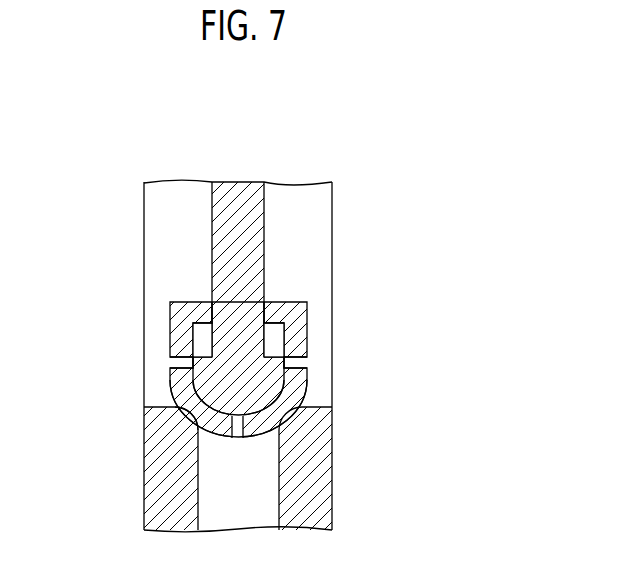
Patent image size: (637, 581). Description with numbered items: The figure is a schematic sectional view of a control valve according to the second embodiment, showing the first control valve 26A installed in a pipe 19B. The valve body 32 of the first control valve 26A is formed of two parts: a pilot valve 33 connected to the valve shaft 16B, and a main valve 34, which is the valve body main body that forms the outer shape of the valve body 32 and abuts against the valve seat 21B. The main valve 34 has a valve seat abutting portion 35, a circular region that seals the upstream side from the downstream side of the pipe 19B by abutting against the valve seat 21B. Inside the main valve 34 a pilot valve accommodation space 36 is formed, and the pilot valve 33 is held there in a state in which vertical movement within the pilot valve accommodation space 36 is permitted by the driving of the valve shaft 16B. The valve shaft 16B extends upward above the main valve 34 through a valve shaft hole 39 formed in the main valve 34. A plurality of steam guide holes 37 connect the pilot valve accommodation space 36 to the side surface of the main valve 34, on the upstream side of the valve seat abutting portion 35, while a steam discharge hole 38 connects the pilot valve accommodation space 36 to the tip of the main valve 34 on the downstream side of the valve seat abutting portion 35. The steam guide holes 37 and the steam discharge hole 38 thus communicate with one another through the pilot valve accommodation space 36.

The valve shaft 16B is at (240, 200).
The pipe 19B is at (333, 231).
The valve seat 21B is at (300, 475).
The first control valve 26A is at (315, 291).
The valve body 32 is at (157, 318).
The pilot valve 33 is at (245, 387).
The main valve 34 is at (187, 390).
The valve seat abutting portion 35 is at (192, 412).
The pilot valve accommodation space 36 is at (273, 342).
The steam guide holes 37 is at (183, 367).
The steam discharge hole 38 is at (238, 425).
The valve shaft hole 39 is at (209, 305).